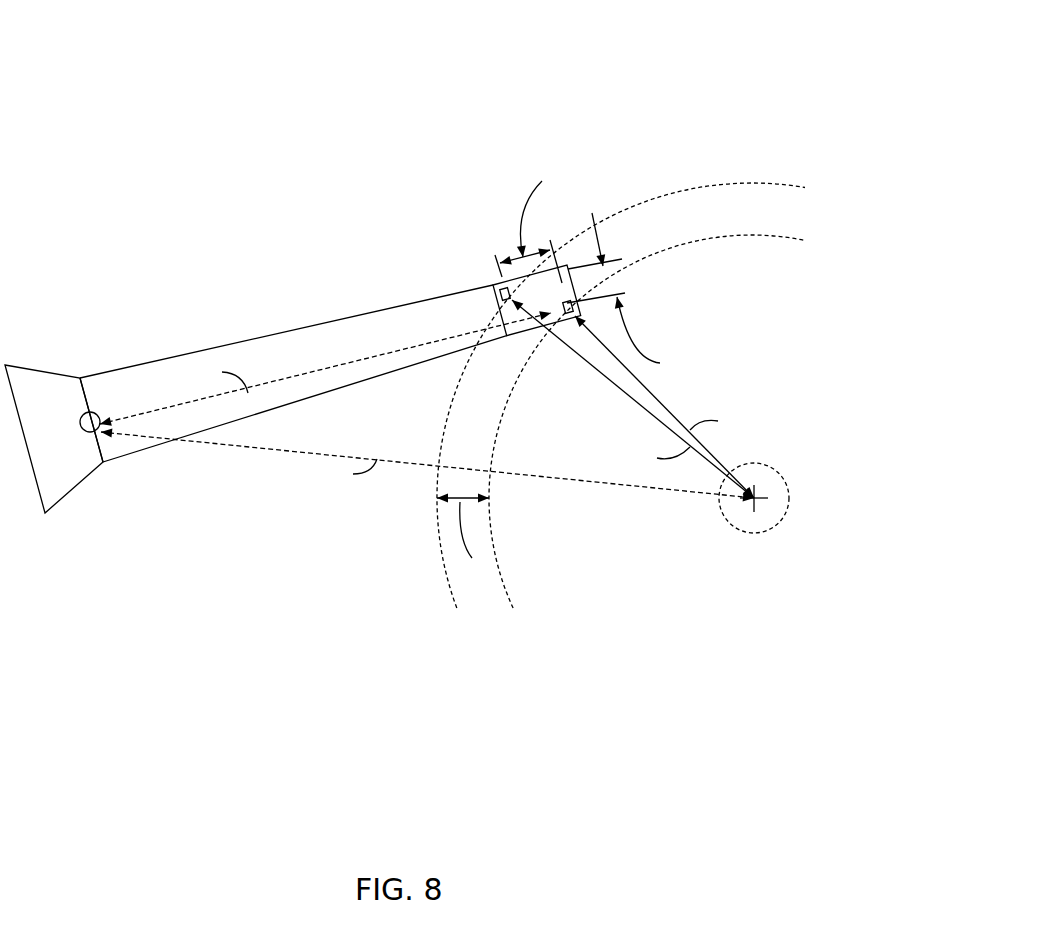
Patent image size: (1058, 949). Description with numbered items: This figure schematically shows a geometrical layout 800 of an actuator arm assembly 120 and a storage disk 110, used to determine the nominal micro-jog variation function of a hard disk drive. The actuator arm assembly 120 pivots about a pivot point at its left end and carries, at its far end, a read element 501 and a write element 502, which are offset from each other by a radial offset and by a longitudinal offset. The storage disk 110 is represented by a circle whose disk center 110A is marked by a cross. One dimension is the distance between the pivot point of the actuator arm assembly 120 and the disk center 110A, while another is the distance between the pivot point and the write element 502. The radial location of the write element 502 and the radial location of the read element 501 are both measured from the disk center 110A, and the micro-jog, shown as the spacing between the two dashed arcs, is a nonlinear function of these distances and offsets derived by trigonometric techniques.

The geometrical layout 800 is at (118, 73).
The actuator arm assembly 120 is at (297, 330).
The read element 501 is at (495, 298).
The write element 502 is at (572, 324).
The storage disk 110 is at (647, 556).
The disk center 110A is at (763, 507).